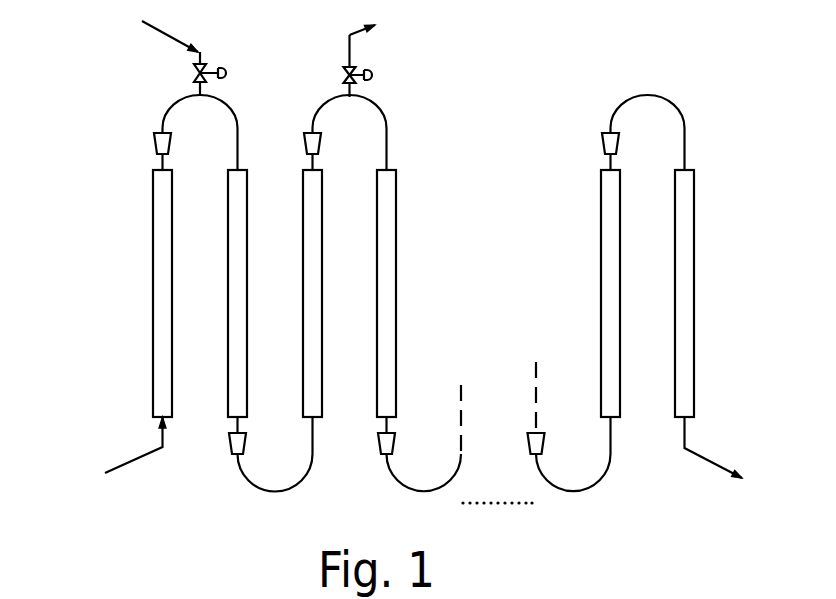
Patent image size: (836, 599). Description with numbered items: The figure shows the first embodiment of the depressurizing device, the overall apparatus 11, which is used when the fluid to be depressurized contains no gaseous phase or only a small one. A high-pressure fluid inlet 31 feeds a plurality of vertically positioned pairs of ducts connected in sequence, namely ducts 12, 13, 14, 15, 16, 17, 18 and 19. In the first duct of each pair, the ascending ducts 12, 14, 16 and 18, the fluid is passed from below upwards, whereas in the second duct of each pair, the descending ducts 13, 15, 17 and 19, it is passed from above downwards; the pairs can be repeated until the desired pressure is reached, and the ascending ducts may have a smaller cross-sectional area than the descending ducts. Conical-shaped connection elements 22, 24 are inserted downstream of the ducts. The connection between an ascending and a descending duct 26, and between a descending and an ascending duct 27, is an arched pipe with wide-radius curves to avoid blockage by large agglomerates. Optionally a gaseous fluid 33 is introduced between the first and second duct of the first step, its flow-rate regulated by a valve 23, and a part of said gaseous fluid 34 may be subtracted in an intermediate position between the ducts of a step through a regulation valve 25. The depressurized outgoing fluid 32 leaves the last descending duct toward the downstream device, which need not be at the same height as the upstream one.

The multi-column apparatus 11 is at (110, 260).
The first duct 12 is at (150, 377).
The second duct 13 is at (226, 377).
The first duct 14 is at (302, 377).
The second duct 15 is at (376, 377).
The first duct 16 is at (459, 378).
The second duct 17 is at (533, 372).
The first duct 18 is at (600, 372).
The second duct 19 is at (674, 372).
The connection element 22 is at (148, 132).
The valve 23 is at (223, 77).
The connection element 24 is at (228, 452).
The regulation valve 25 is at (372, 78).
The connection between the ascending and descending duct 26 is at (235, 110).
The connection between the descending and ascending duct 27 is at (295, 485).
The high-pressure fluid inlet 31 is at (100, 458).
The outgoing fluid 32 is at (745, 470).
The gaseous fluid 33 is at (148, 32).
The part of said gaseous fluid 34 is at (382, 25).